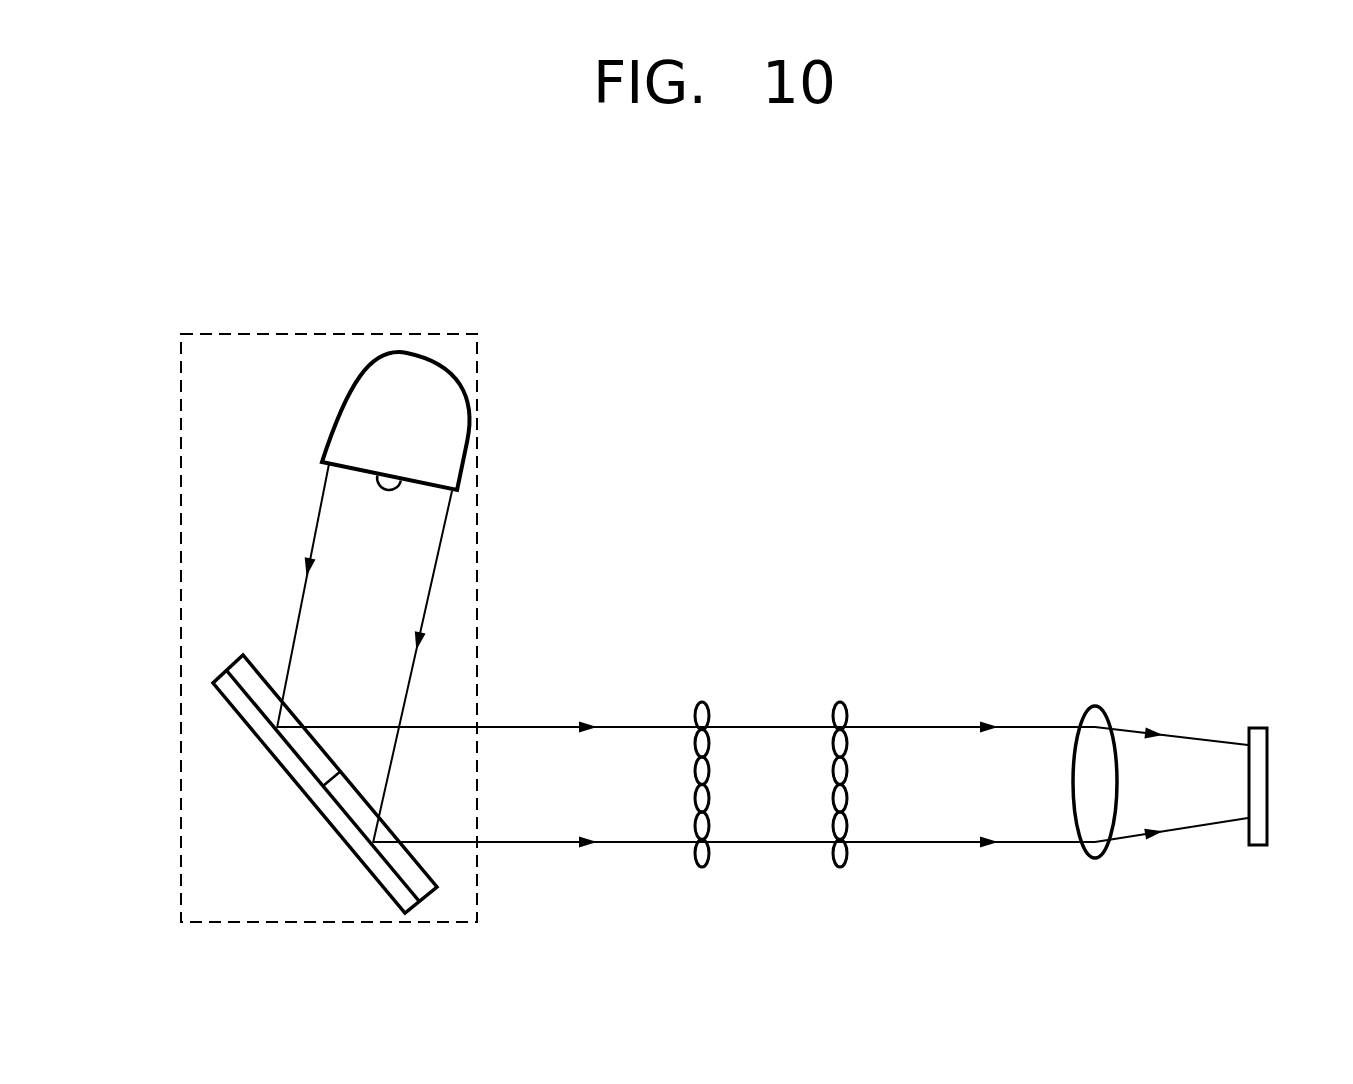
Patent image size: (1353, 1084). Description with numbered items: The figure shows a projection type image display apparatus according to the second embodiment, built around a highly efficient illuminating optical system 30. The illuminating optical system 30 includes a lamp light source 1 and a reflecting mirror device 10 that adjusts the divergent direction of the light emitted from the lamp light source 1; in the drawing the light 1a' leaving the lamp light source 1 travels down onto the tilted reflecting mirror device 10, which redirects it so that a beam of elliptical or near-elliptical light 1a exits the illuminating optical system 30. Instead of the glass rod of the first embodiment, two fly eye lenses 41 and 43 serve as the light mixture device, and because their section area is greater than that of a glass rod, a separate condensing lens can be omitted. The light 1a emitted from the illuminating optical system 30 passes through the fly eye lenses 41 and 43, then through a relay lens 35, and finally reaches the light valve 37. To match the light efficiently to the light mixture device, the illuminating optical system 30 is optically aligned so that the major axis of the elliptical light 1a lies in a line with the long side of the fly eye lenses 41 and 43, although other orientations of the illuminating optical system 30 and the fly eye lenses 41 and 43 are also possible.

The lamp light source 1 is at (316, 373).
The illuminating optical system 30 is at (413, 334).
The light emitted from light source 1a' is at (319, 645).
The reflecting mirror device 10 is at (226, 789).
The elliptical or near-elliptical light 1a is at (762, 727).
The fly eye lens 41 is at (702, 702).
The fly eye lens 43 is at (840, 702).
The relay lens 35 is at (1094, 710).
The light valve 37 is at (1262, 735).